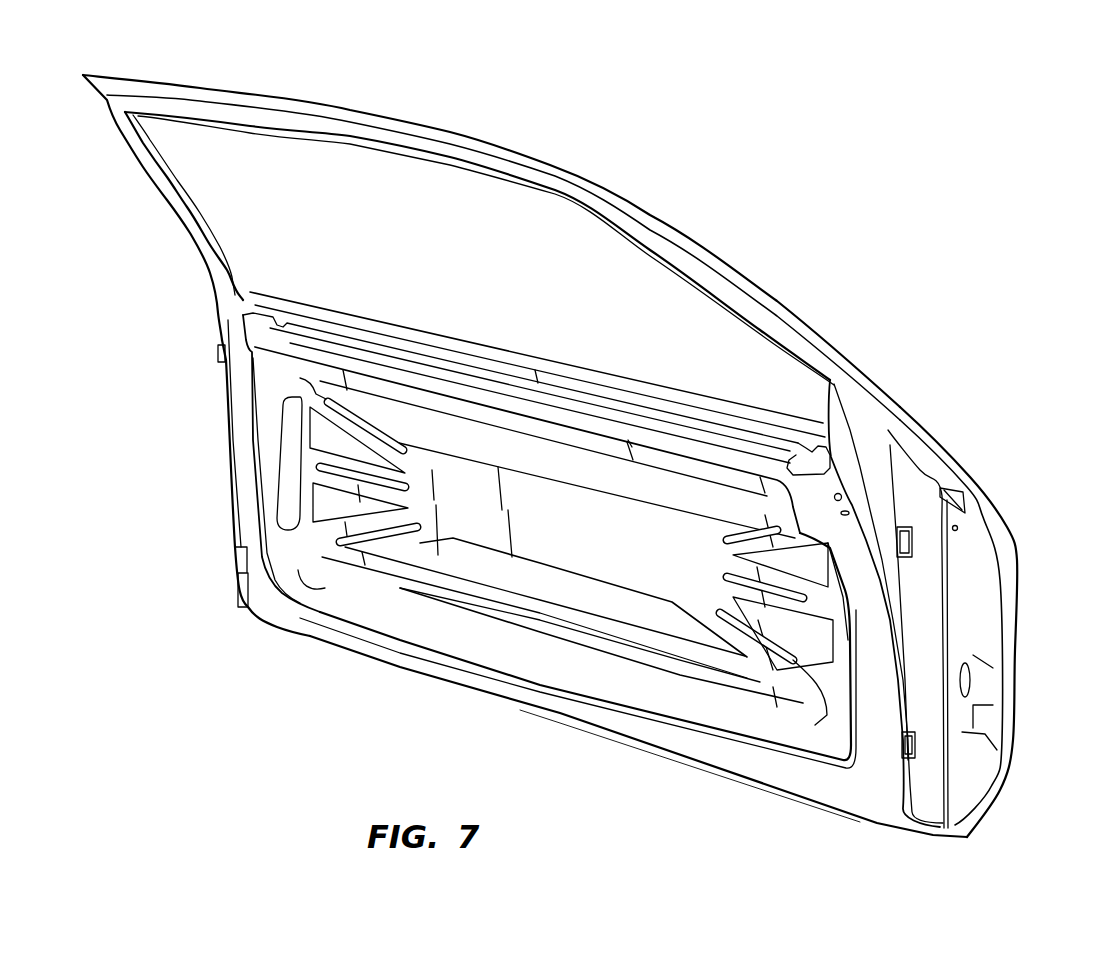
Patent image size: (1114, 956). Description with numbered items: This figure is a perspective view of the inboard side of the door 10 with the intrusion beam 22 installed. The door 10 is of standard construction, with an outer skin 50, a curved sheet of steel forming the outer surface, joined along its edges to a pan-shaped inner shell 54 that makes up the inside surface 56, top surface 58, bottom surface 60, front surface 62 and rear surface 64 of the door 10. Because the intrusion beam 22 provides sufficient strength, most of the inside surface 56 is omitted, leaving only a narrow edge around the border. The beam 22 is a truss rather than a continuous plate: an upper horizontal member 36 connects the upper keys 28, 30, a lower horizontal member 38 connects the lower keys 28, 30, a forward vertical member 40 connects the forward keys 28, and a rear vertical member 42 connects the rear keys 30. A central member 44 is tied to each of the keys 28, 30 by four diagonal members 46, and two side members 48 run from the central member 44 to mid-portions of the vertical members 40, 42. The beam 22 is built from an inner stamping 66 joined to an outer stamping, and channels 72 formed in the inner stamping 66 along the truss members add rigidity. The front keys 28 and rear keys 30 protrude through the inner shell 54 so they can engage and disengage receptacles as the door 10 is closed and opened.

The door 10 is at (971, 364).
The intrusion beam 22 is at (514, 637).
The front keys 28 is at (912, 543).
The rear keys 30 is at (220, 352).
The upper horizontal member 36 is at (600, 452).
The lower horizontal member 38 is at (567, 605).
The forward vertical member 40 is at (845, 597).
The rear vertical member 42 is at (280, 438).
The central member 44 is at (628, 554).
The diagonal members 46 is at (403, 450).
The side members 48 is at (408, 485).
The outer skin 50 is at (1010, 535).
The inner shell 54 is at (962, 598).
The inside surface 56 is at (870, 612).
The top surface 58 is at (538, 378).
The bottom surface 60 is at (753, 770).
The front surface 62 is at (962, 732).
The rear surface 64 is at (230, 495).
The inner stamping 66 is at (565, 539).
The channels 72 is at (315, 385).